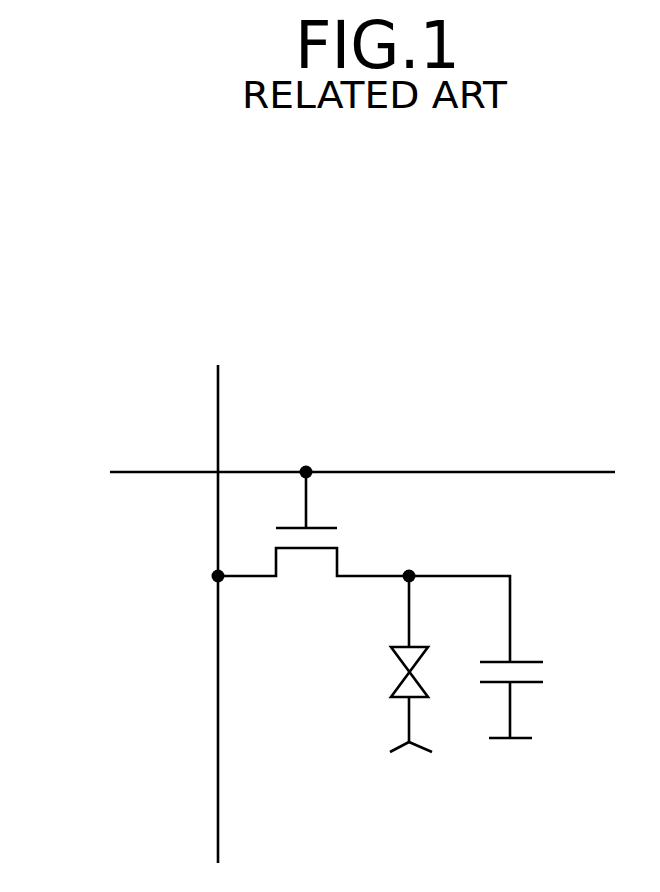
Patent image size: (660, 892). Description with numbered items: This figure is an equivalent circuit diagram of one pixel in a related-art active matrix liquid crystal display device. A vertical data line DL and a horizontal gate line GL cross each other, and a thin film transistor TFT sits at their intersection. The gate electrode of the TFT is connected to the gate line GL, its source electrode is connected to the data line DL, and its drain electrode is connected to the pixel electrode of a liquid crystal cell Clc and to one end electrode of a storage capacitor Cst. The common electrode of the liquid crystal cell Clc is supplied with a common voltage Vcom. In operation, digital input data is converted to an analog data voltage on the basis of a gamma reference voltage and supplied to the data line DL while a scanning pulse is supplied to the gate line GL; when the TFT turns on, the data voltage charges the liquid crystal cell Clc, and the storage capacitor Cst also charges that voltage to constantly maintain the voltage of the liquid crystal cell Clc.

The data line DL is at (217, 590).
The gate line GL is at (333, 473).
The thin film transistor TFT is at (313, 524).
The liquid crystal cell Clc is at (383, 656).
The storage capacitor Cst is at (510, 657).
The common voltage Vcom is at (413, 767).